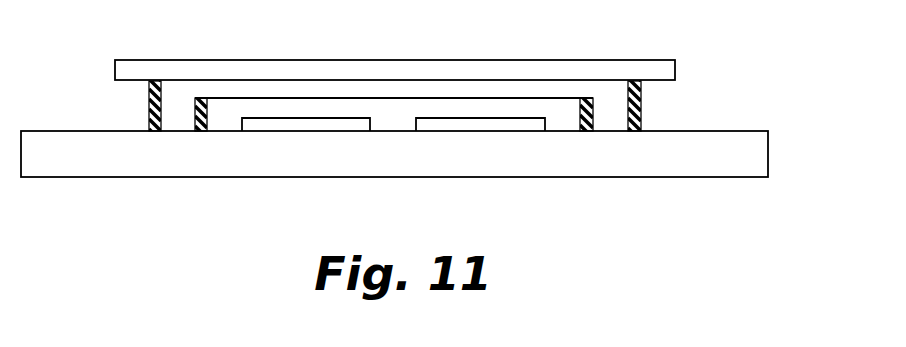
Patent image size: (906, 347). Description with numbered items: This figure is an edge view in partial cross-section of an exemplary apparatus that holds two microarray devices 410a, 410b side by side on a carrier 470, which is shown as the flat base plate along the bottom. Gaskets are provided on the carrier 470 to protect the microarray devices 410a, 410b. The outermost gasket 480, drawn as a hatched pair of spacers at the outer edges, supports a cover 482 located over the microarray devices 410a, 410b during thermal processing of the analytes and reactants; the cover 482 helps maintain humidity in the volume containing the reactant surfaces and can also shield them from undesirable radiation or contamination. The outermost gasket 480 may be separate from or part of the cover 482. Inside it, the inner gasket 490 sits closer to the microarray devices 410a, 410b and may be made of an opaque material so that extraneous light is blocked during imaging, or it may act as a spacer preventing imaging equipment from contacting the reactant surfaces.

The carrier 470 is at (760, 152).
The cover 482 is at (425, 67).
The outermost gasket 480 is at (149, 105).
The inner gasket 490 is at (201, 98).
The microarray device 410a is at (332, 125).
The microarray device 410b is at (501, 125).